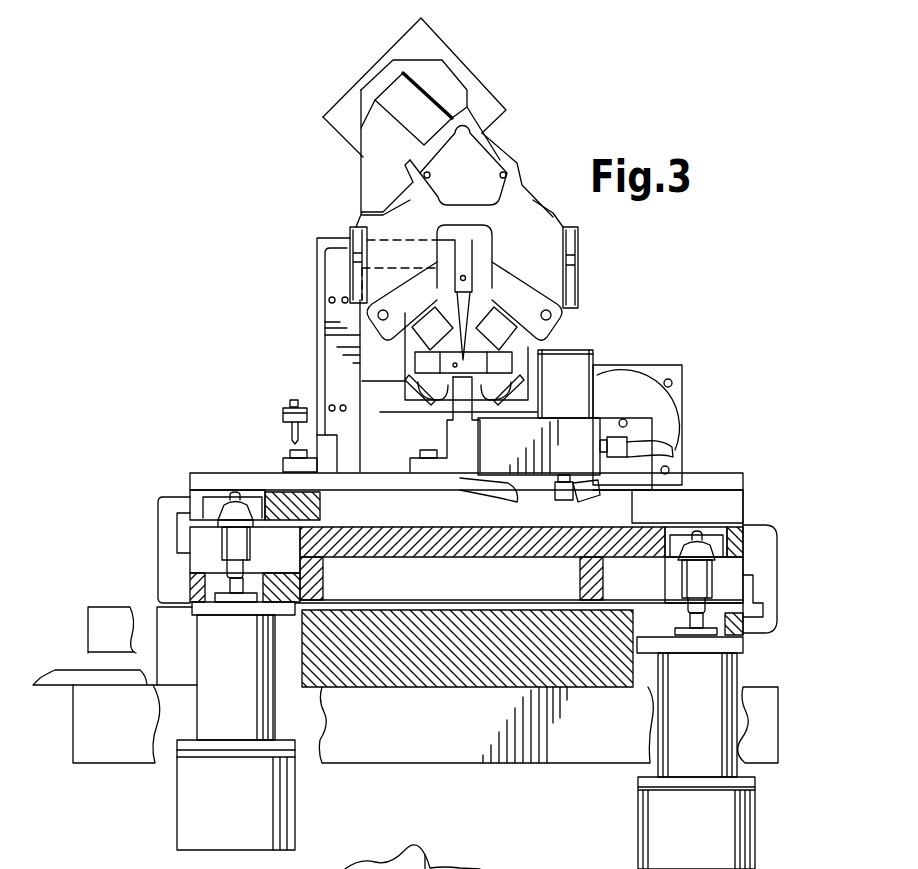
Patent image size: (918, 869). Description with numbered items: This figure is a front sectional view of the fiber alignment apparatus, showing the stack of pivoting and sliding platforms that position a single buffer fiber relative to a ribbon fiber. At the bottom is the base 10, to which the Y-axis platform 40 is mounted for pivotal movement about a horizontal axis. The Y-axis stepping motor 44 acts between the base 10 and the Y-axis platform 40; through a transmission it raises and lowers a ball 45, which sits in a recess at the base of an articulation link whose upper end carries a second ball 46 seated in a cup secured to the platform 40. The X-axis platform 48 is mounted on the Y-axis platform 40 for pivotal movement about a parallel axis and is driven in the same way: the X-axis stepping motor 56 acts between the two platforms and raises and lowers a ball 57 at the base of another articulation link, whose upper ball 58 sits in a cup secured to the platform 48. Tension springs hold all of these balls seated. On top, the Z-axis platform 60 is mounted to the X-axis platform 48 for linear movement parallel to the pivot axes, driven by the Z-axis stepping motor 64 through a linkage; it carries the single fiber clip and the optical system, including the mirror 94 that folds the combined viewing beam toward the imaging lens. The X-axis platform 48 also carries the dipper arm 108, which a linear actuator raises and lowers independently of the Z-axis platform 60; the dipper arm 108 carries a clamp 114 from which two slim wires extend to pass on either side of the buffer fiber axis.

The base 10 is at (451, 762).
The Y-axis platform 40 is at (763, 559).
The Y-axis stepping motor 44 is at (640, 835).
The ball 45 is at (700, 612).
The second ball 46 is at (696, 528).
The X-axis platform 48 is at (722, 497).
The X-axis stepping motor 56 is at (177, 810).
The ball 57 is at (236, 594).
The second ball 58 is at (236, 493).
The Z-axis platform 60 is at (602, 288).
The Z-axis stepping motor 64 is at (655, 367).
The mirror 94 is at (417, 103).
The dipper arm 108 is at (318, 311).
The clamp 114 is at (412, 868).